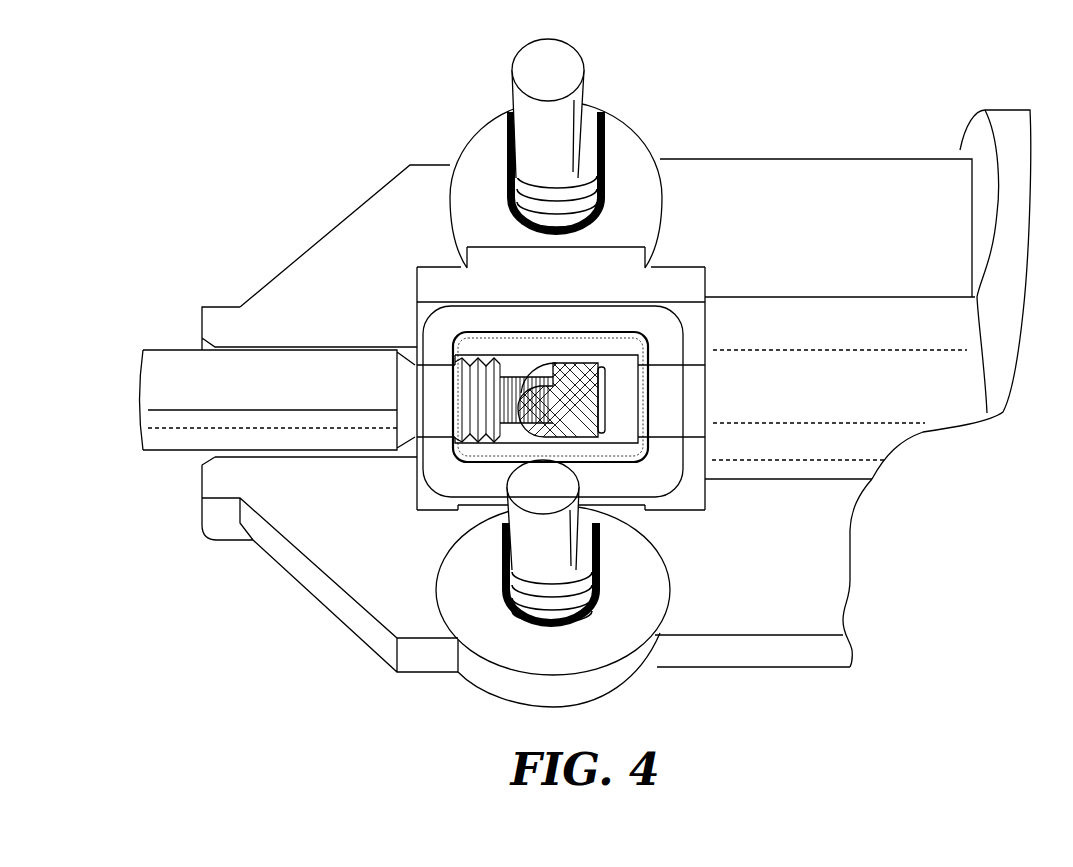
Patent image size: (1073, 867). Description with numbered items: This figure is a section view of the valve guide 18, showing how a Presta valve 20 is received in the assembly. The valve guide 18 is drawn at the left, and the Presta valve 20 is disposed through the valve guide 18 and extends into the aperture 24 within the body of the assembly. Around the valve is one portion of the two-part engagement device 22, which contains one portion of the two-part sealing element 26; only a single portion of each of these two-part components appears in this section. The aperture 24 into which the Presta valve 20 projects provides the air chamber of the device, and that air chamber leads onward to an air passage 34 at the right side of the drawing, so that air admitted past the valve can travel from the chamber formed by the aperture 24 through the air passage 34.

The valve guide 18 is at (220, 330).
The Presta valve 20 is at (458, 437).
The 2-part engagement device 22 is at (877, 210).
The aperture 24 is at (622, 377).
The 2-part sealing element 26 is at (488, 347).
The air passage 34 is at (680, 397).